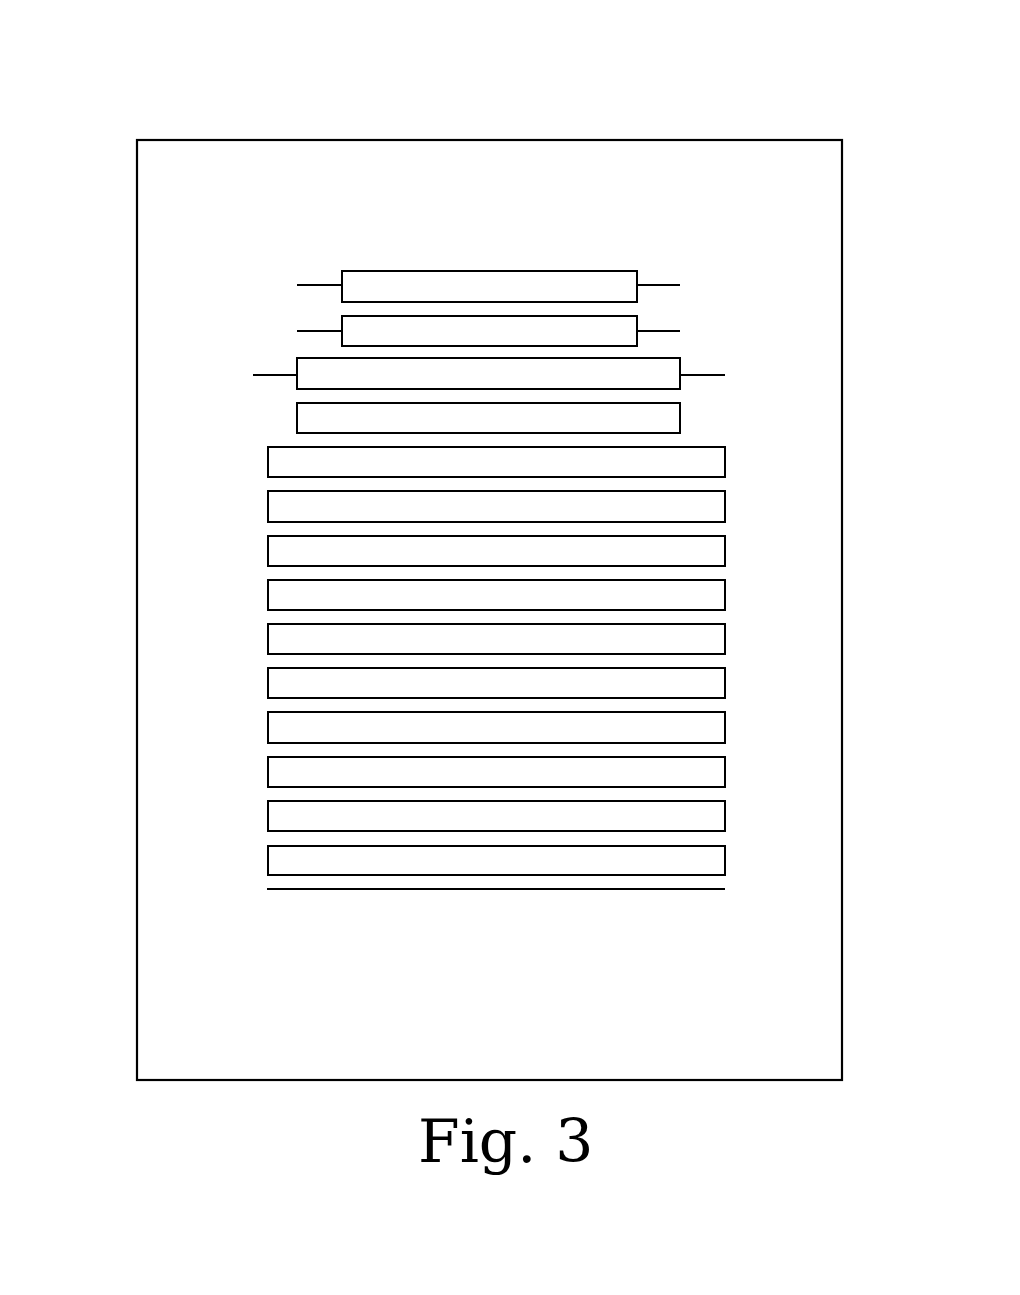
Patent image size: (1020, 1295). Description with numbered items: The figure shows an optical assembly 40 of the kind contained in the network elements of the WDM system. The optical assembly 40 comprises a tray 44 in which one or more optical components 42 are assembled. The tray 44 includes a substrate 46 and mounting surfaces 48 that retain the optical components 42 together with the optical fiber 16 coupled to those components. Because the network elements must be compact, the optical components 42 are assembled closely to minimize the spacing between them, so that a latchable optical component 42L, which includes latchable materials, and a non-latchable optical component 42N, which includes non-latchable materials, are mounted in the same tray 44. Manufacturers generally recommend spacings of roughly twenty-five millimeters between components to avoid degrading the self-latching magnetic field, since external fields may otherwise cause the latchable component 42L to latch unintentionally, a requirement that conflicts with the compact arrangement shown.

The optical assembly 40 is at (778, 102).
The tray 44 is at (460, 140).
The substrate 46 is at (210, 204).
The optical fiber 16 is at (329, 285).
The optical component 42 is at (650, 286).
The latchable optical component 42L is at (253, 507).
The non-latchable optical component 42N is at (253, 550).
The mounting surface 48 is at (590, 889).